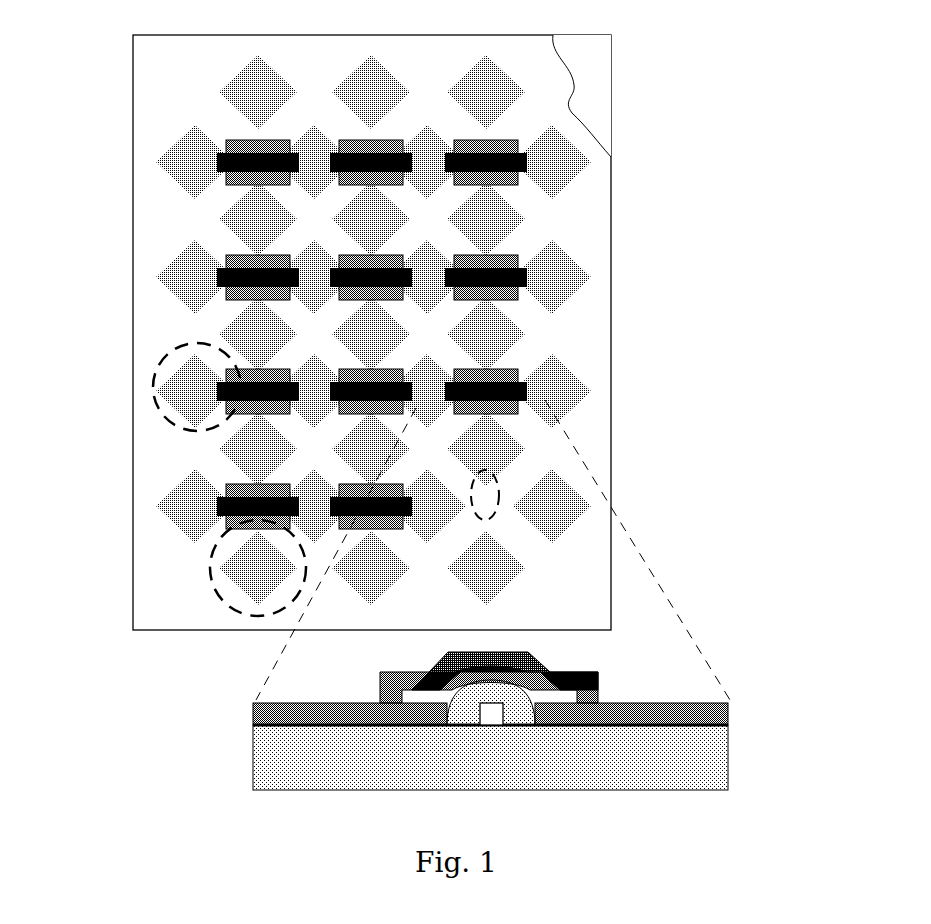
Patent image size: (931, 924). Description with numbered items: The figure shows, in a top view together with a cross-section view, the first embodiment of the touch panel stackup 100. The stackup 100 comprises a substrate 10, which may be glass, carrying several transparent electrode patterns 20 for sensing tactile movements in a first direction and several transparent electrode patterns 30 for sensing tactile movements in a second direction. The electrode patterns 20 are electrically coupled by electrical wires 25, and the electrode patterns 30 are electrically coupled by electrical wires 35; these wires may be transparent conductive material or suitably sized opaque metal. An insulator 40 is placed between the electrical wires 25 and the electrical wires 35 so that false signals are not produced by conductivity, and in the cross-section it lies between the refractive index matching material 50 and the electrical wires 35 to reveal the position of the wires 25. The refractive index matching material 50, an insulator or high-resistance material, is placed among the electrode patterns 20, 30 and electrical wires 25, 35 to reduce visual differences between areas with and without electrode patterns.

The touch panel stackup 100 is at (372, 315).
The substrate 10 is at (600, 65).
The transparent electrode pattern 20 is at (228, 533).
The electrical wire 25 is at (482, 470).
The transparent electrode pattern 30 is at (163, 365).
The electrical wire 35 is at (423, 390).
The insulator 40 is at (503, 262).
The refractive index matching material 50 is at (217, 115).